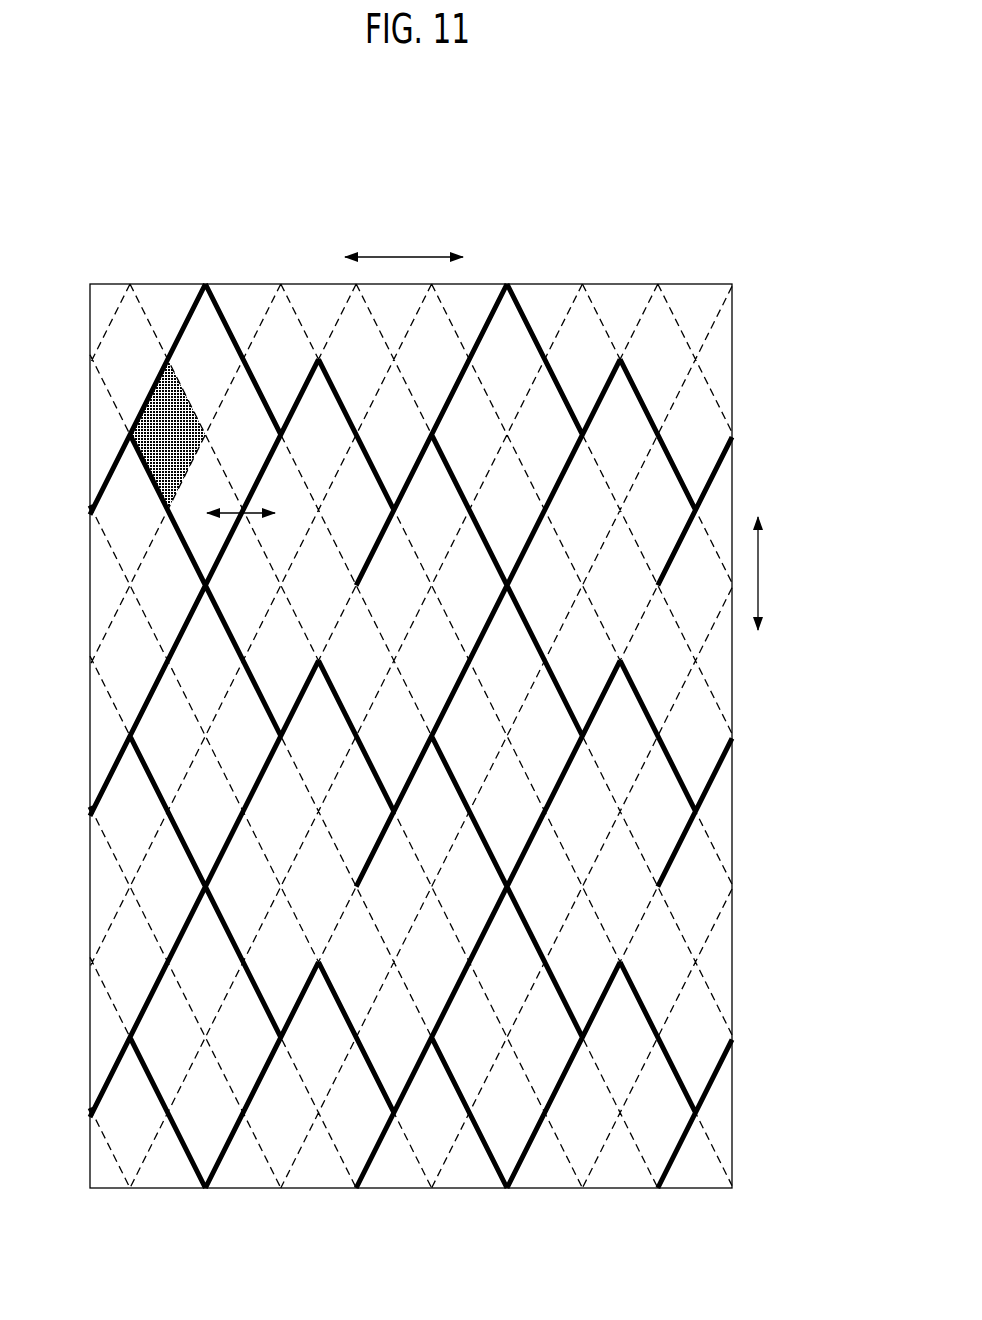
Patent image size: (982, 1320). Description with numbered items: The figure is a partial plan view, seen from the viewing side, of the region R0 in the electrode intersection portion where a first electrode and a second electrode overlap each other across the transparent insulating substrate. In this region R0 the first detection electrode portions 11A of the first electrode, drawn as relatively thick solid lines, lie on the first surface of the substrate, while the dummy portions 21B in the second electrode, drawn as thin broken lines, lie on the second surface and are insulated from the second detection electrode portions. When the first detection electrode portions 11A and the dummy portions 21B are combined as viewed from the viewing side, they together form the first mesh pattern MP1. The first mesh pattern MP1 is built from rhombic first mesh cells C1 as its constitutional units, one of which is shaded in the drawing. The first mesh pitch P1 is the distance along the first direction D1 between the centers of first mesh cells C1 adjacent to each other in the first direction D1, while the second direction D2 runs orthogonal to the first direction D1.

The first detection electrode portion 11A is at (522, 308).
The dummy portion in the second electrode 21B is at (597, 309).
The first mesh pattern MP1 is at (743, 322).
The region R0 is at (733, 393).
The first mesh cell C1 is at (162, 459).
The first direction D1 is at (404, 240).
The second direction D2 is at (781, 573).
The first mesh pitch P1 is at (249, 494).